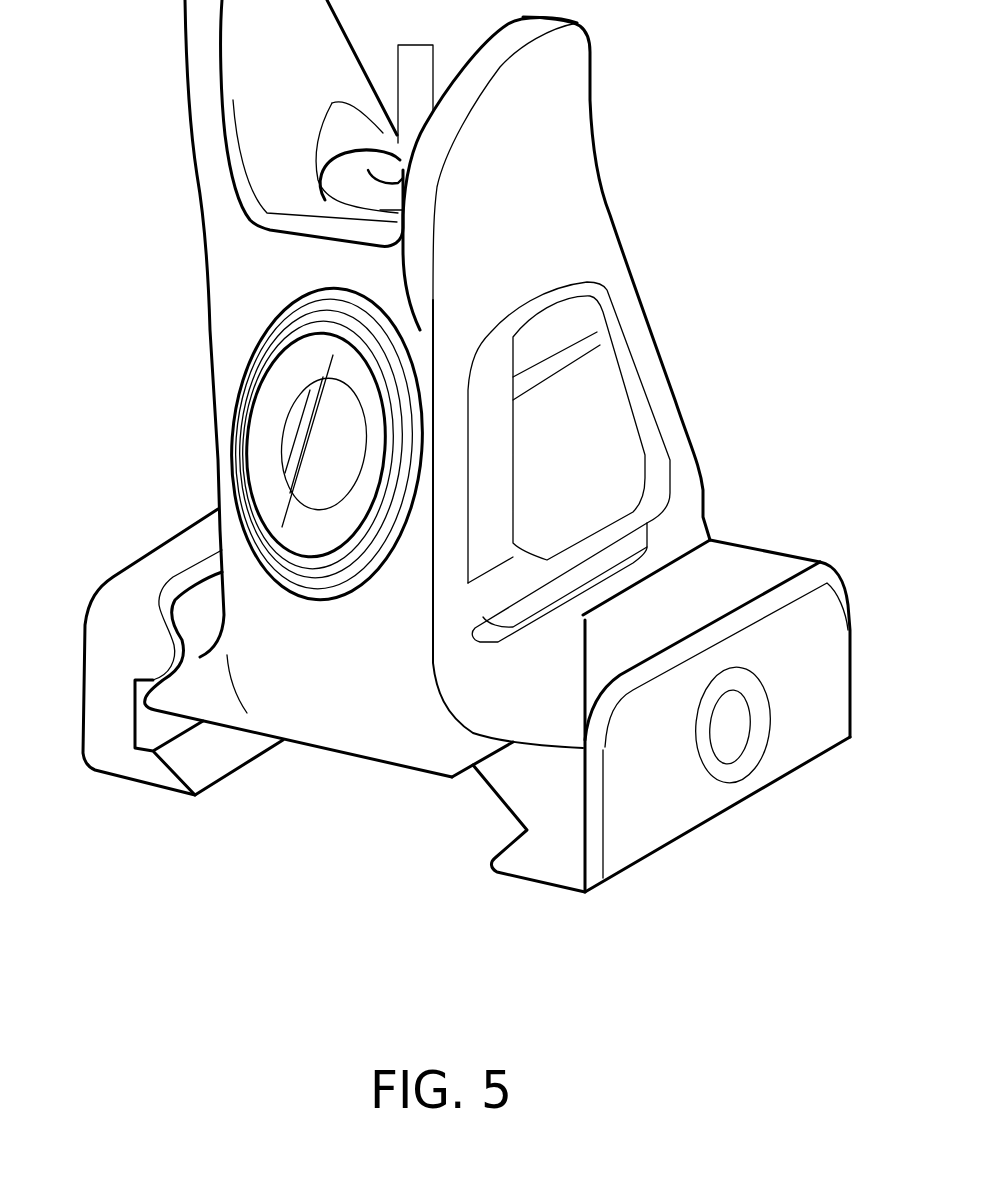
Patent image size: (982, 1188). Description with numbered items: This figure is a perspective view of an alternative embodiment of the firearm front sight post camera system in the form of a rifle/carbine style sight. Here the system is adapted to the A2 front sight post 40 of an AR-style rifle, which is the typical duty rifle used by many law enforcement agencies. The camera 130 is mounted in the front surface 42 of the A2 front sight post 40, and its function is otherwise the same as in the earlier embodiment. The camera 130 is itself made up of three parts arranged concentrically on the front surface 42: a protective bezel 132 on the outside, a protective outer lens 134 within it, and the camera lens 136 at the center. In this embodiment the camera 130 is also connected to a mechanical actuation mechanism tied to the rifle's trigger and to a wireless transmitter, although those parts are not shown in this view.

The A2 front sight post 40 is at (434, 446).
The front surface 42 is at (243, 310).
The camera 130 is at (416, 370).
The protective bezel 132 is at (388, 310).
The protective outer lens 134 is at (367, 373).
The camera lens 136 is at (332, 443).